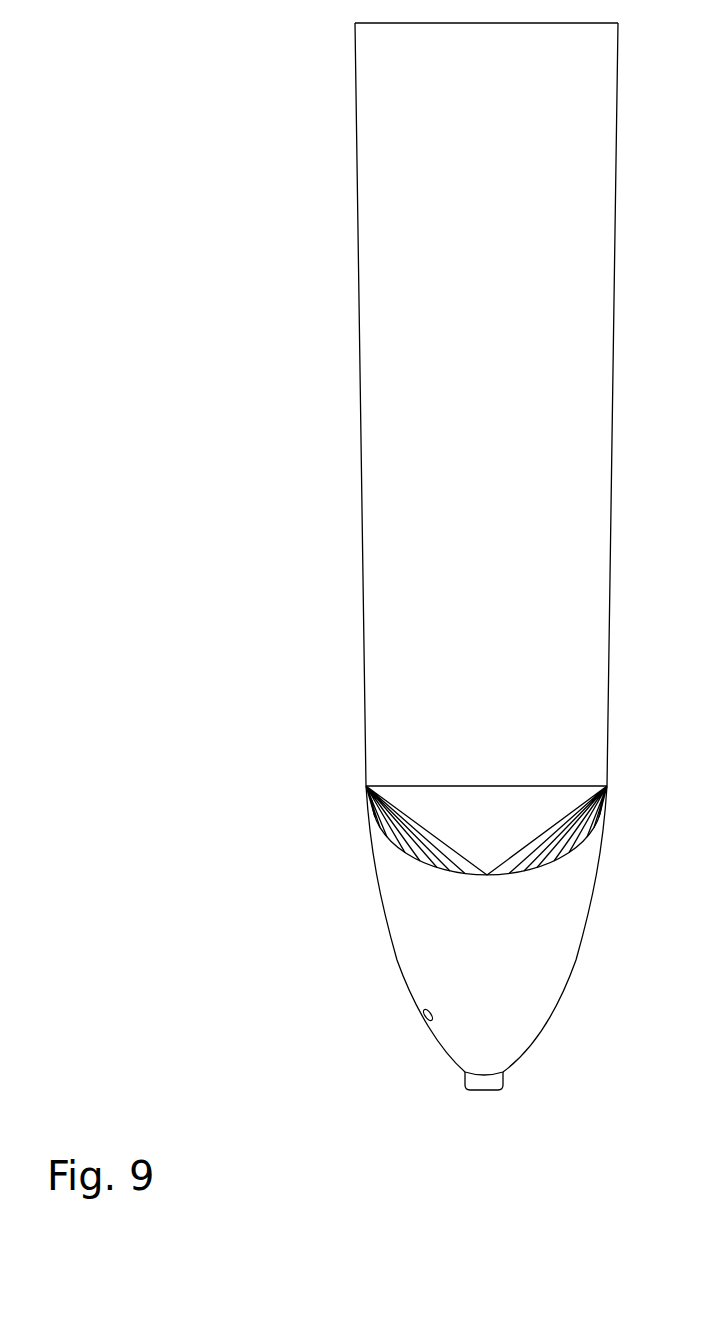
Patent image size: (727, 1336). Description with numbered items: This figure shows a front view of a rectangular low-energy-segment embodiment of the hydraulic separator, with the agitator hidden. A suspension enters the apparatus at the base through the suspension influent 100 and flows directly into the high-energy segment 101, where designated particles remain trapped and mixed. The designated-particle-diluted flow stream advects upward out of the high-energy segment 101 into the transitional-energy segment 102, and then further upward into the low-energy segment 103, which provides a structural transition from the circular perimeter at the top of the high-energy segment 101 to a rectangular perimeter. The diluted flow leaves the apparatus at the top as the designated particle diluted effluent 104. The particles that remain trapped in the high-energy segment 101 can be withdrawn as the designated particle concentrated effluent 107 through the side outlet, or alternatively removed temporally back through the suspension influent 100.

The suspension influent 100 is at (487, 1090).
The high-energy segment 101 is at (502, 963).
The transitional-energy segment 102 is at (473, 810).
The low-energy segment 103 is at (507, 415).
The designated particle diluted effluent 104 is at (400, 22).
The designated particle concentrated effluent 107 is at (420, 1016).